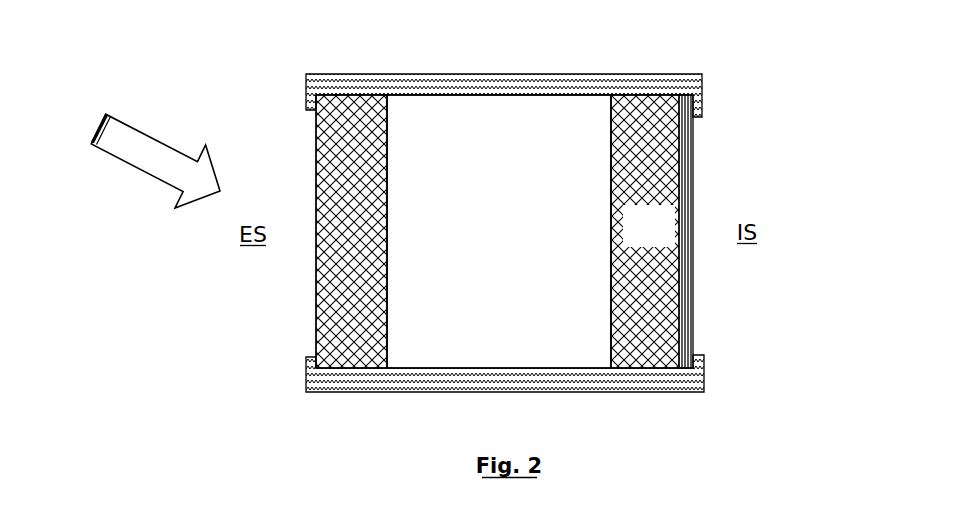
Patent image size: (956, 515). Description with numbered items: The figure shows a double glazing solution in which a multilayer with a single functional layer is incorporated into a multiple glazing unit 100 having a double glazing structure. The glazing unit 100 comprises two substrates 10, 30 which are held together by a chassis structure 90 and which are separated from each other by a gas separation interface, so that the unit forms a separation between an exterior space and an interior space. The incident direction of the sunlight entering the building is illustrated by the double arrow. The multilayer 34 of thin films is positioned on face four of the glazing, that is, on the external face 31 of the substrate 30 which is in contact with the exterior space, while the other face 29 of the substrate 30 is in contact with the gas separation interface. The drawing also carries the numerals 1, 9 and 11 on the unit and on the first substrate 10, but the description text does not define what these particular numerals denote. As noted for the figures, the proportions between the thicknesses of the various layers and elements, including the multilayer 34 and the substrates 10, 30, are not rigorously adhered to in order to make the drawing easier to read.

The multiple glazing unit 100 is at (433, 245).
The chassis structure 90 is at (388, 90).
The multilayer of thin films 34 is at (695, 367).
The substrate 10 is at (350, 286).
The outer surface of first wall 9 is at (318, 345).
The inner surface of first wall 11 is at (387, 308).
The substrate 30 is at (594, 231).
The face of the substrate 29 is at (622, 333).
The external face of the substrate 31 is at (680, 302).
The interior cavity 1 is at (492, 243).